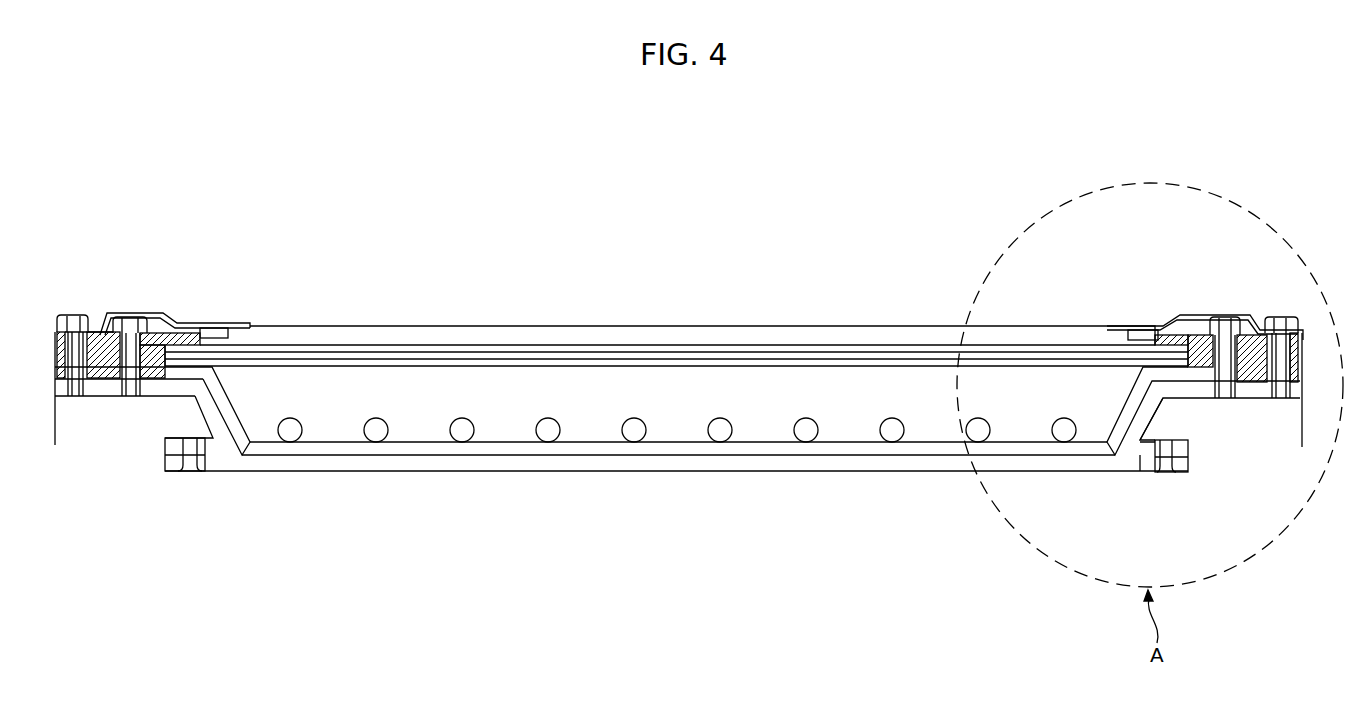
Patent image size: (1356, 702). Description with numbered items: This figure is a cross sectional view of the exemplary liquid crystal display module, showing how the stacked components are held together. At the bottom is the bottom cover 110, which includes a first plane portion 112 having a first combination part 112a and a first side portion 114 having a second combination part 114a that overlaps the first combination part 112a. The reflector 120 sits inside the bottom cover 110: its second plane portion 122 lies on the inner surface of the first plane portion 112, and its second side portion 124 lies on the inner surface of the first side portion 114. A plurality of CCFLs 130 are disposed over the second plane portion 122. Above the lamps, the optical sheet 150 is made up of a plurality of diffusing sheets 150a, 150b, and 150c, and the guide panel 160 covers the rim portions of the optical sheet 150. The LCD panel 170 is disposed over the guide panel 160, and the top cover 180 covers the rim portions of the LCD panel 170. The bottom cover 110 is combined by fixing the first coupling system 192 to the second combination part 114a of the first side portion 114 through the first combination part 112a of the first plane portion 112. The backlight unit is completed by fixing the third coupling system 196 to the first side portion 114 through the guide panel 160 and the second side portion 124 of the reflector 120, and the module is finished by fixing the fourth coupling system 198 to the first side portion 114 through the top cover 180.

The bottom cover 110 is at (732, 483).
The first plane portion 112 is at (1032, 464).
The first combination part 112a is at (1142, 465).
The first side portion 114 is at (1132, 442).
The second combination part 114a is at (1146, 441).
The reflector 120 is at (732, 410).
The second plane portion 122 is at (1025, 451).
The second side portion 124 is at (1114, 437).
The CCFLs 130 is at (806, 444).
The optical sheet 150 is at (676, 290).
The diffusing sheet 150a is at (340, 350).
The diffusing sheet 150b is at (393, 356).
The diffusing sheet 150c is at (343, 256).
The guide panel 160 is at (1197, 340).
The LCD panel 170 is at (1075, 333).
The top cover 180 is at (1143, 330).
The first coupling system 192 is at (1188, 448).
The third coupling system 196 is at (1232, 325).
The fourth coupling system 198 is at (1277, 318).